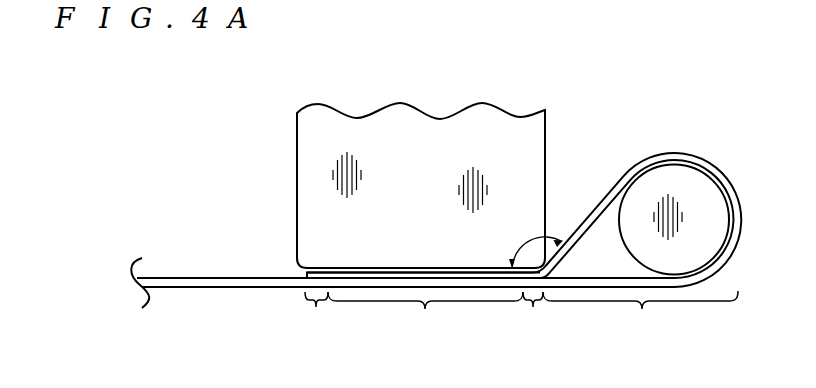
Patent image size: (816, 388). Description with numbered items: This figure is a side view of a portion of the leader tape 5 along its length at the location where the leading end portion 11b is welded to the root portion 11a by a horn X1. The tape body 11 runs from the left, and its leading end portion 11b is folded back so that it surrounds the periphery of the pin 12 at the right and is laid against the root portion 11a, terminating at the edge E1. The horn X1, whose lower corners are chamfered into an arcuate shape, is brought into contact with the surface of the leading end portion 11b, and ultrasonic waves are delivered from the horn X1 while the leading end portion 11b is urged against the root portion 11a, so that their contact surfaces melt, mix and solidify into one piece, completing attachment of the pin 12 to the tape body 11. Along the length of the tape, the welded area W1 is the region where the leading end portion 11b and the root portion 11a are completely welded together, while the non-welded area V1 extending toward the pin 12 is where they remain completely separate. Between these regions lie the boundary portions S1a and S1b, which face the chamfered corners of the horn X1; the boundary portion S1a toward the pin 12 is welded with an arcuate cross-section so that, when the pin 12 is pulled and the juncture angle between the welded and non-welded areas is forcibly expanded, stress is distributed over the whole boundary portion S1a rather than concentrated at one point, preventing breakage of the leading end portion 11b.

The leader tape 5 is at (666, 105).
The tape body 11 is at (168, 277).
The root portion 11a is at (432, 282).
The leading end portion 11b is at (340, 270).
The pin 12 is at (672, 173).
The horn X1 is at (313, 131).
The edge E1 is at (305, 272).
The boundary portion S1b is at (319, 316).
The welded area W1 is at (425, 316).
The boundary portion S1a is at (528, 315).
The non-welded area V1 is at (640, 314).